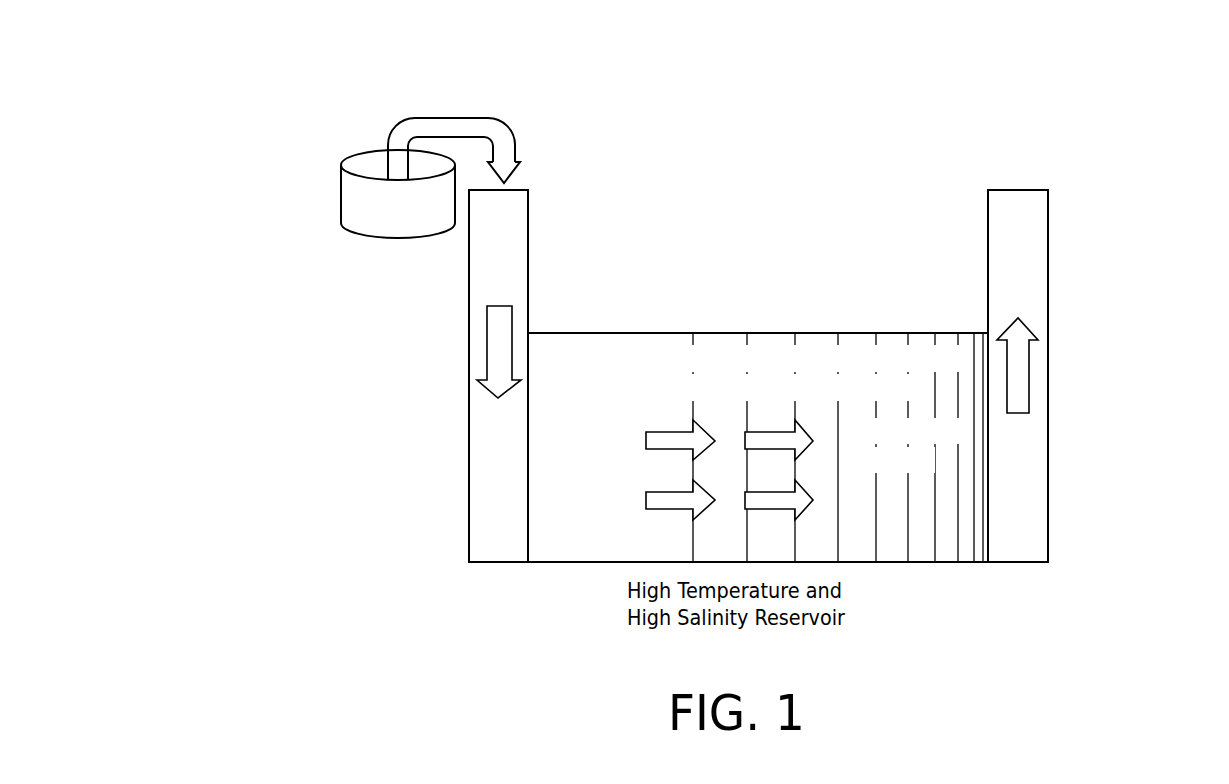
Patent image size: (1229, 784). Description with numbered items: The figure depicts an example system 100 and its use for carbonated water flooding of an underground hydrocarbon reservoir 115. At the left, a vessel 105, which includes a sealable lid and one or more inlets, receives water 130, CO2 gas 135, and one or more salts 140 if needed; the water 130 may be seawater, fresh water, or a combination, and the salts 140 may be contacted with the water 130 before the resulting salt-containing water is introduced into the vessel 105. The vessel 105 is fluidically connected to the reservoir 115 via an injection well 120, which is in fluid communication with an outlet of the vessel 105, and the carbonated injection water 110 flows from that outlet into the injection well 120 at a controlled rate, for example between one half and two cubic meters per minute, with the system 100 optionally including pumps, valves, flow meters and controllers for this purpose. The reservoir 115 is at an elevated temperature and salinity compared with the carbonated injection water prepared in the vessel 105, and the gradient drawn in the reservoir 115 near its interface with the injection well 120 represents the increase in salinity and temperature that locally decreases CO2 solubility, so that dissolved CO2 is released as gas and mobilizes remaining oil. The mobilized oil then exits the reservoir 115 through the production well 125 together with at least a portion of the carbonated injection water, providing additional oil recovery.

The system 100 is at (427, 98).
The vessel 105 is at (377, 228).
The carbonated injection water 110 is at (505, 157).
The underground hydrocarbon reservoir 115 is at (685, 337).
The injection well 120 is at (520, 313).
The production well 125 is at (1036, 370).
The water 130 is at (318, 173).
The CO2 gas 135 is at (325, 195).
The salts 140 is at (325, 213).